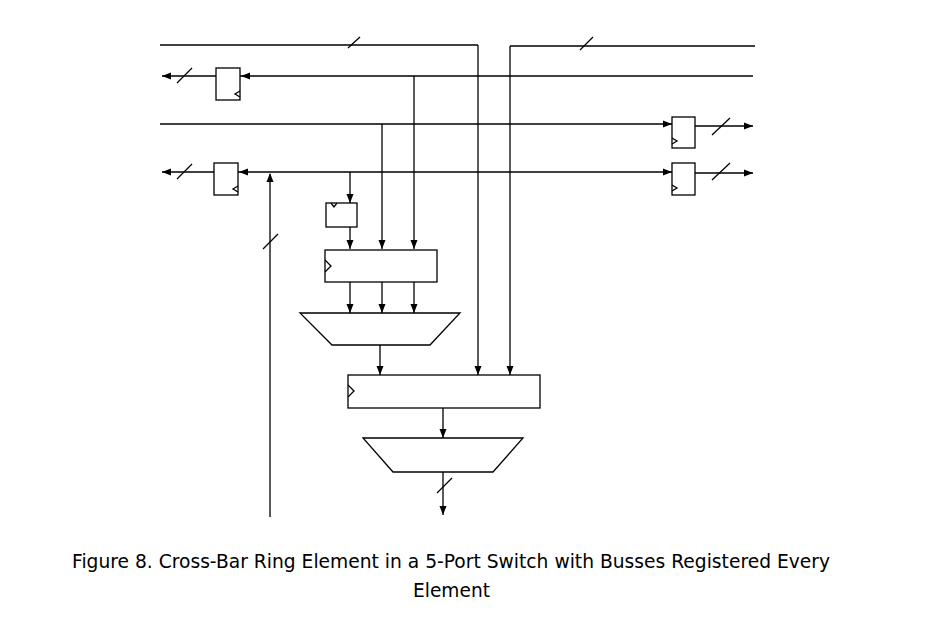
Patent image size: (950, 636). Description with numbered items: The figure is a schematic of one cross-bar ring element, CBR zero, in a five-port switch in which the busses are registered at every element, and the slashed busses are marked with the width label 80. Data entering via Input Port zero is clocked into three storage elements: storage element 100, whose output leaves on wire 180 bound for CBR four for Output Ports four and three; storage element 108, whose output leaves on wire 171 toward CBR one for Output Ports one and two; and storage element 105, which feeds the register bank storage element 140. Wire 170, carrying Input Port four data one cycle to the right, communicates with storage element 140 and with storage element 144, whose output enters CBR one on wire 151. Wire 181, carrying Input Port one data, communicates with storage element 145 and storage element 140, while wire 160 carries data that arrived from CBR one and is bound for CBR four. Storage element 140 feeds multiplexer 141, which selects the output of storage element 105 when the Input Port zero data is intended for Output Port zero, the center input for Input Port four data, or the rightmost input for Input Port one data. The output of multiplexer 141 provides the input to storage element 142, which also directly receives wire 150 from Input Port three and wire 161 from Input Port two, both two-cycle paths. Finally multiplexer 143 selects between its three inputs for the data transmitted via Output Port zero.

The wire 150 is at (246, 205).
The wire 161 is at (710, 206).
The wire 160 is at (119, 87).
The wire 181 is at (562, 156).
The wire 170 is at (356, 179).
The wire 180 is at (118, 200).
The wire 151 is at (794, 134).
The wire 171 is at (570, 203).
The storage element 145 is at (246, 88).
The storage element 100 is at (230, 171).
The storage element 105 is at (323, 210).
The storage element 144 is at (687, 123).
The storage element 108 is at (693, 190).
The storage element 140 is at (397, 281).
The multiplexer 141 is at (383, 344).
The storage element 142 is at (466, 406).
The multiplexer 143 is at (460, 490).
The 80-bit bus width 80 is at (271, 358).